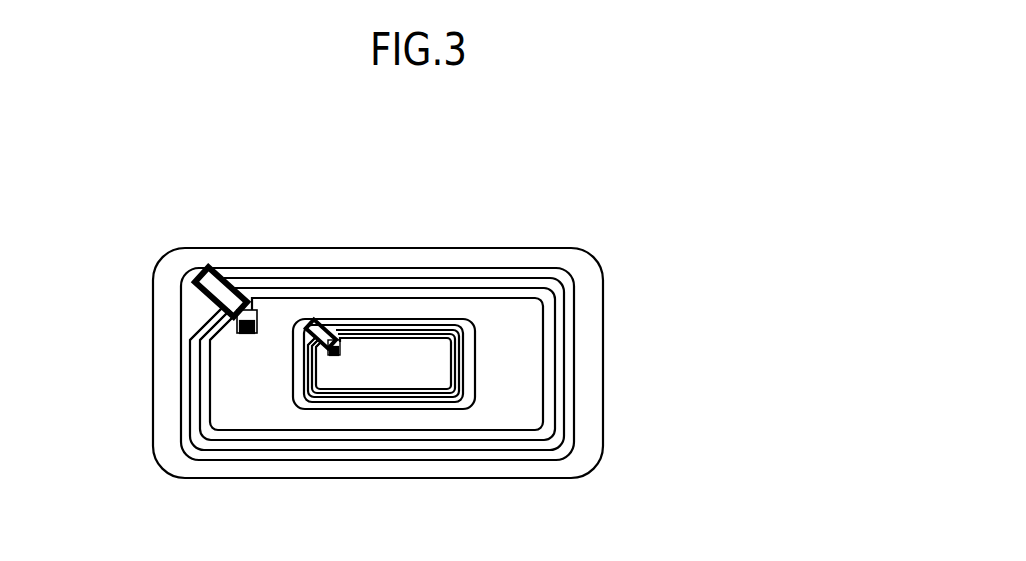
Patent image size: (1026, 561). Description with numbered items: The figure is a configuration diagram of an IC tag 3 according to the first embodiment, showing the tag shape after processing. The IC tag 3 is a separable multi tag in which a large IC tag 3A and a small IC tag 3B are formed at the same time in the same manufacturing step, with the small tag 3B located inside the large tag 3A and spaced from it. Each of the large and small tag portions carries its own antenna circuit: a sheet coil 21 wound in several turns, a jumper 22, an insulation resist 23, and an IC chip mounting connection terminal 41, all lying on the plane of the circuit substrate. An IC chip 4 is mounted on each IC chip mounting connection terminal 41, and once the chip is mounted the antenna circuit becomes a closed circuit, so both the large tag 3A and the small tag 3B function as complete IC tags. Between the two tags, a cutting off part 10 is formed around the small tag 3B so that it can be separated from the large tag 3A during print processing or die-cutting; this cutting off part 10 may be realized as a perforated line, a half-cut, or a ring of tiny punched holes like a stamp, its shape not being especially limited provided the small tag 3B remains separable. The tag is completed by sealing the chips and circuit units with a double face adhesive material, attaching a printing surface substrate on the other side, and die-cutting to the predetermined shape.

The IC tag 3 is at (431, 339).
The large IC tag 3A is at (527, 265).
The small IC tag 3B is at (627, 276).
The IC chip 4 is at (207, 337).
The cutting off part 10 is at (477, 350).
The sheet coil 21 is at (463, 377).
The jumper 22 is at (205, 270).
The insulation resist 23 is at (198, 290).
The IC chip mounting connection terminal 41 is at (237, 340).